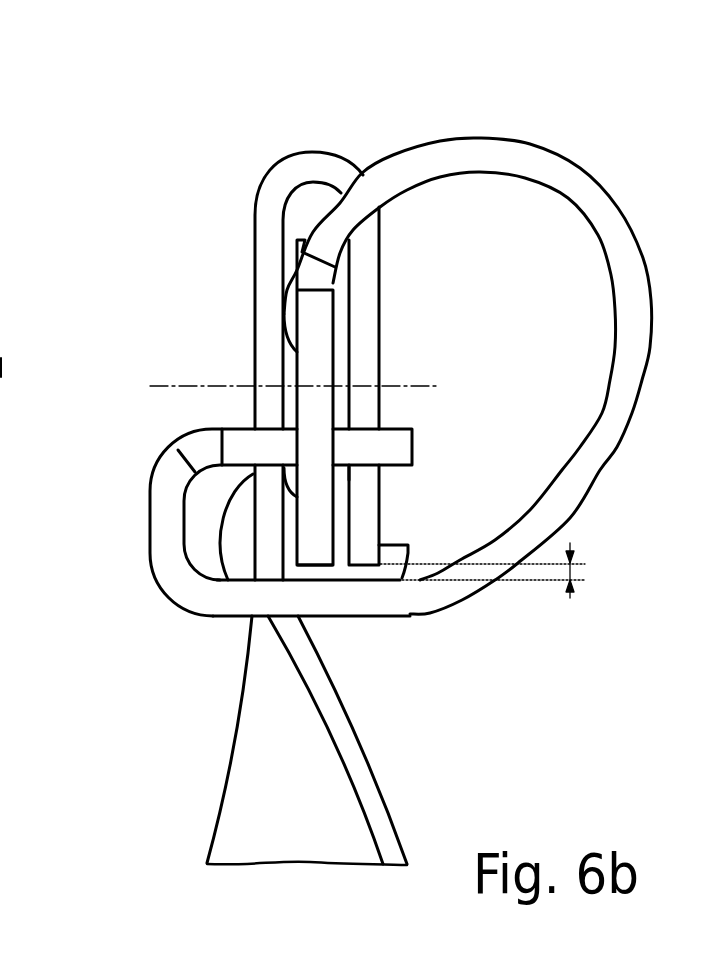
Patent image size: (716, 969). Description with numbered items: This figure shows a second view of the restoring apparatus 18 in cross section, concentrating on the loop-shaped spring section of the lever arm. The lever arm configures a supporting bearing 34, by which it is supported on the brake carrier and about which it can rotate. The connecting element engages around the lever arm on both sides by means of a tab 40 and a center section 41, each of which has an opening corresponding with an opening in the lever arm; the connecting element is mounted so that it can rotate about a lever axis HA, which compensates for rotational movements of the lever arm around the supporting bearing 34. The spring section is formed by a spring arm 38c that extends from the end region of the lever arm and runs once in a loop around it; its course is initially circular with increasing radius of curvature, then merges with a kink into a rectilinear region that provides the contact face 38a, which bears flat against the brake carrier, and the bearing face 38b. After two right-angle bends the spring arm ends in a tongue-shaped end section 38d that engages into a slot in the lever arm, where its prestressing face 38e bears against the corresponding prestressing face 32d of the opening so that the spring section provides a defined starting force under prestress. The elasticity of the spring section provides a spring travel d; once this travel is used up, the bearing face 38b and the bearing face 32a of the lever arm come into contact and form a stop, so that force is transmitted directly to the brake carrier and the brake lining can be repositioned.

The restoring apparatus 18 is at (490, 98).
The supporting bearing 34 is at (0, 212).
The center section 41 is at (268, 245).
The lever axis HA is at (192, 387).
The tab 40 is at (367, 328).
The spring arm 38c is at (560, 183).
The prestressing face 32d is at (337, 462).
The end section 38d is at (398, 447).
The prestressing face 38e is at (342, 468).
The spring travel d is at (573, 575).
The bearing face 32a is at (313, 567).
The contact face 38a is at (343, 617).
The bearing face 38b is at (317, 580).